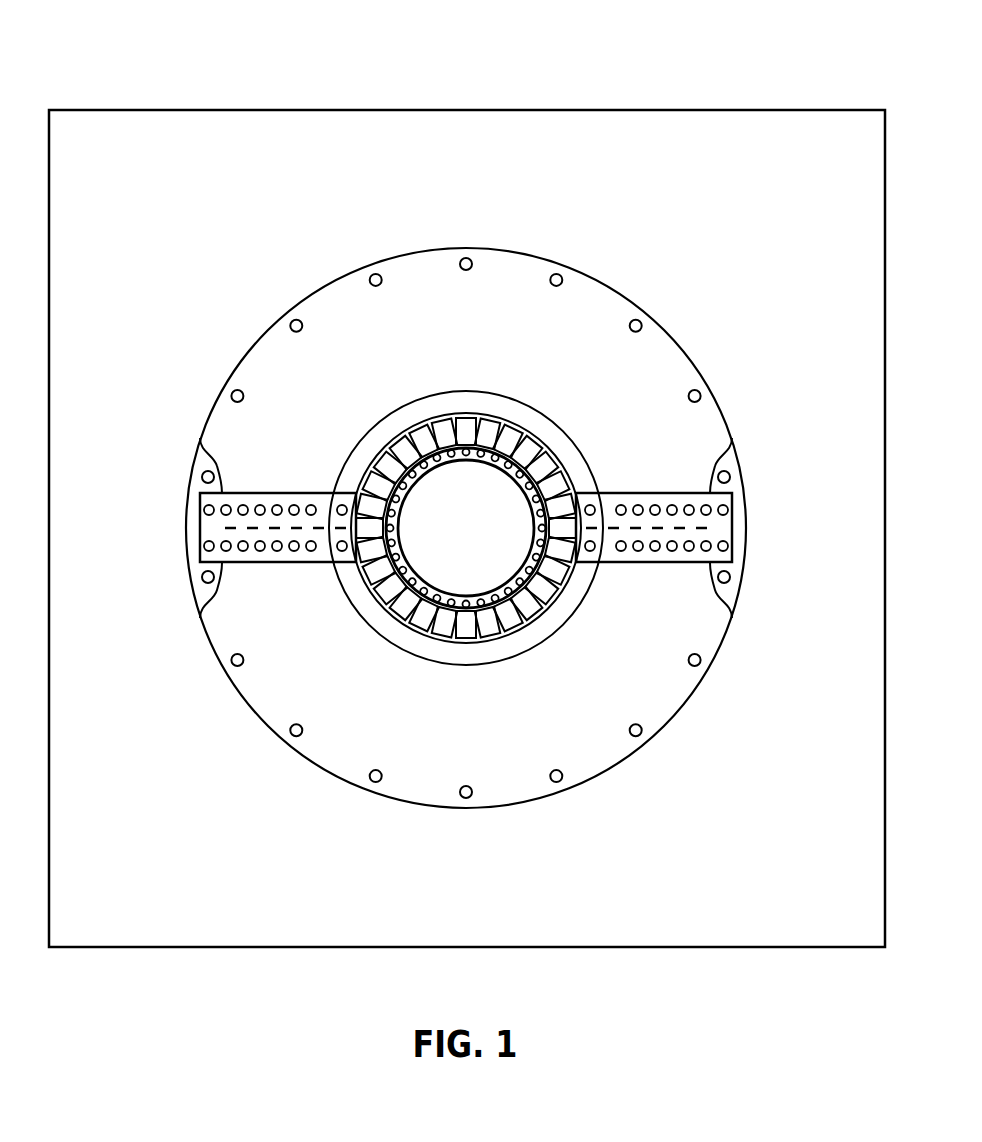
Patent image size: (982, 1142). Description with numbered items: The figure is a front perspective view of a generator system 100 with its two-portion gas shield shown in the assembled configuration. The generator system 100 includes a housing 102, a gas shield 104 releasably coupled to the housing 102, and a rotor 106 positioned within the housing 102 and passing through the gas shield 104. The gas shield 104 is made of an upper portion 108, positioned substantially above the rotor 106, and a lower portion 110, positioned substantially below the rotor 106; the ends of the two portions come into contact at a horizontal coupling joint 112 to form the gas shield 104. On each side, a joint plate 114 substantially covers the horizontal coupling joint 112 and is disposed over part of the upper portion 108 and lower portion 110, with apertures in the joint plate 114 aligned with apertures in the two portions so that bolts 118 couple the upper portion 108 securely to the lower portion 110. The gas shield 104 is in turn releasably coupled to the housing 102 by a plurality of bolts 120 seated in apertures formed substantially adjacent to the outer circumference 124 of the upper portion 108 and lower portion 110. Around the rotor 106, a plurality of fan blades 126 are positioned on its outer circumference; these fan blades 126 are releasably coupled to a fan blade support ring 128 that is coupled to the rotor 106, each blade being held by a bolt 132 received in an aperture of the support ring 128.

The generator system 100 is at (450, 86).
The housing 102 is at (131, 250).
The gas shield 104 is at (602, 247).
The rotor 106 is at (447, 533).
The upper portion 108 is at (463, 341).
The lower portion 110 is at (463, 738).
The horizontal coupling joint 112 is at (213, 528).
The joint plate 114 is at (201, 442).
The bolts 118 is at (205, 509).
The bolts 120 is at (372, 272).
The outer circumference 124 is at (303, 300).
The fan blades 126 is at (535, 592).
The fan blade support ring 128 is at (505, 595).
The bolt 132 is at (540, 609).